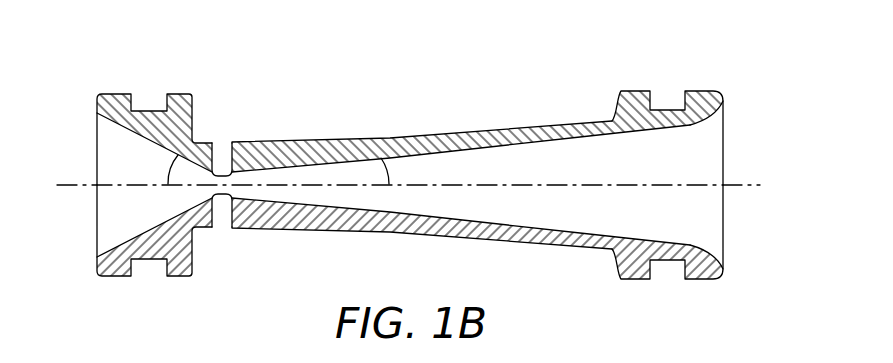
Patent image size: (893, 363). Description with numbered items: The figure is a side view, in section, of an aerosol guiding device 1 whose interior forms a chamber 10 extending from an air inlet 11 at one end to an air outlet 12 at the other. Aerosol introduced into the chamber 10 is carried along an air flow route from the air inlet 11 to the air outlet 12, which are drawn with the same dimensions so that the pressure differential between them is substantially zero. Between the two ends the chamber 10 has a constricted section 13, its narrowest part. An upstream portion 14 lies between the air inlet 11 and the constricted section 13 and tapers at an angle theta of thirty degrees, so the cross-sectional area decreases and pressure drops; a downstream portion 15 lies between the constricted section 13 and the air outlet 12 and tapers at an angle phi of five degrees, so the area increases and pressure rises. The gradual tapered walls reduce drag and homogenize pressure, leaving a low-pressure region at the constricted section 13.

The aerosol guiding device 1 is at (411, 149).
The chamber 10 is at (322, 142).
The air inlet 11 is at (97, 136).
The air outlet 12 is at (728, 133).
The constricted section 13 is at (224, 196).
The upstream portion 14 is at (110, 218).
The downstream portion 15 is at (515, 207).